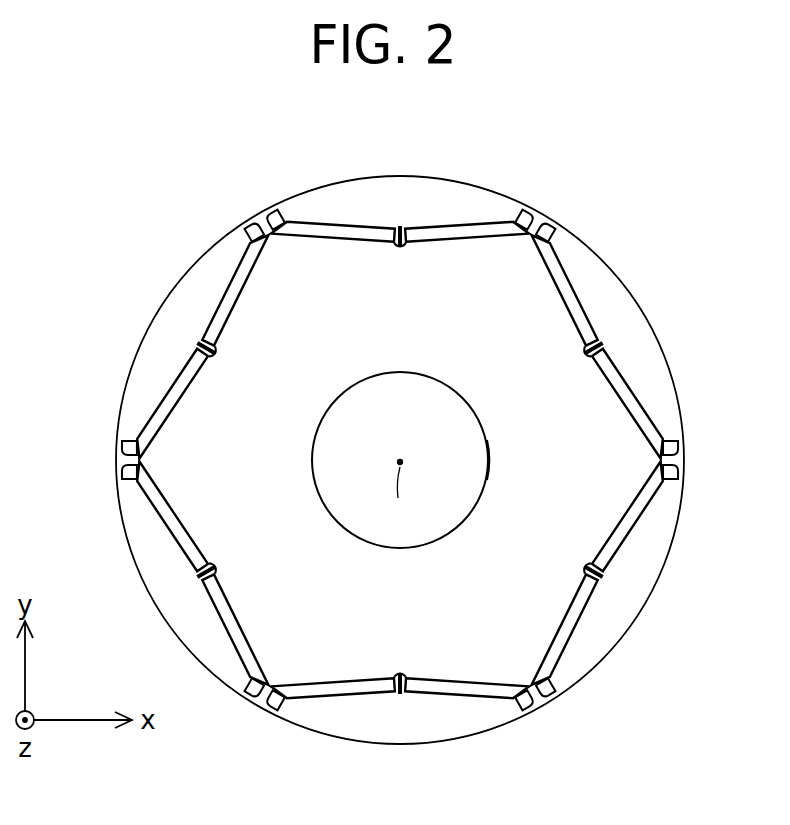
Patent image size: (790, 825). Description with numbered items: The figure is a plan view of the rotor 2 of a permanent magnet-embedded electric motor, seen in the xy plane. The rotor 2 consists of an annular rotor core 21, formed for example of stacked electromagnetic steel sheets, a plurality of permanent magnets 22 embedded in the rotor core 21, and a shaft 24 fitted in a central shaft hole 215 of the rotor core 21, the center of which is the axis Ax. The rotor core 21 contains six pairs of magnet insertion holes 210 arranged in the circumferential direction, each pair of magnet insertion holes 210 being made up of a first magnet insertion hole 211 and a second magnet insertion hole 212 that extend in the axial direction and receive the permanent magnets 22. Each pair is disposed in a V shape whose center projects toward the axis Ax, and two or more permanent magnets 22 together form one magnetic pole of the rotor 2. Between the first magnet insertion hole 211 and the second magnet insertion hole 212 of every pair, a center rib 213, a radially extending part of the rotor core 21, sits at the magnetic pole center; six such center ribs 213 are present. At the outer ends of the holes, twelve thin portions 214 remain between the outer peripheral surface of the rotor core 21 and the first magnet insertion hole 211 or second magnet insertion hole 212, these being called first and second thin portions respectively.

The rotor 2 is at (118, 226).
The rotor core 21 is at (187, 270).
The permanent magnet 22 is at (400, 460).
The shaft 24 is at (333, 468).
The pair of magnet insertion holes 210 is at (400, 460).
The first magnet insertion hole 211 is at (367, 240).
The second magnet insertion hole 212 is at (432, 240).
The center rib 213 is at (400, 238).
The thin portion 214 is at (270, 208).
The shaft hole 215 is at (483, 457).